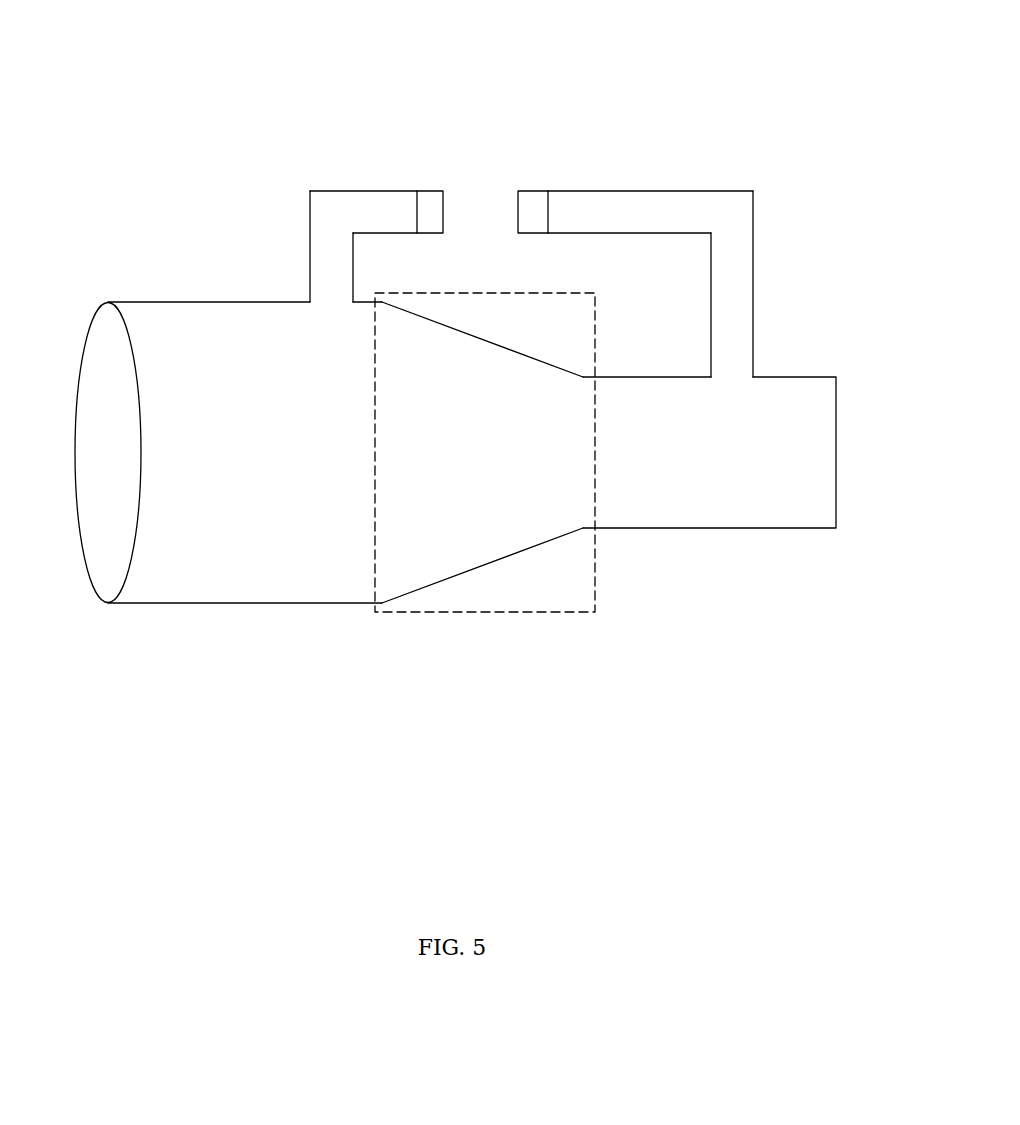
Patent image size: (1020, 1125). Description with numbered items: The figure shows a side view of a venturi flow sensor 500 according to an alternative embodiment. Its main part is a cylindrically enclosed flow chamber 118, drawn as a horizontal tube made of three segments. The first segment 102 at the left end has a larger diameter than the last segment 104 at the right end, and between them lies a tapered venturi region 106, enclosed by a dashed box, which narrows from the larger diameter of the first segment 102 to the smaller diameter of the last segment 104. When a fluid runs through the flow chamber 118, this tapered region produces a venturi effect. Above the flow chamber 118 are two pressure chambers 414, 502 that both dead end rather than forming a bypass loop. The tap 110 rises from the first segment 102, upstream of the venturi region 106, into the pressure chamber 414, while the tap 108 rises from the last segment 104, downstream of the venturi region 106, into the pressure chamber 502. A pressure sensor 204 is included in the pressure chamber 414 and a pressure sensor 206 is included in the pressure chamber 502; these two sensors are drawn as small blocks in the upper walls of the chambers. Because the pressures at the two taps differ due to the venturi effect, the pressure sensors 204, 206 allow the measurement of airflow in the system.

The venturi flow sensor 500 is at (702, 118).
The first segment 102 is at (173, 580).
The cylindrically enclosed flow chamber 118 is at (70, 581).
The tapered venturi region 106 is at (472, 595).
The last segment 104 is at (724, 492).
The tap 108 is at (721, 332).
The tap 110 is at (323, 278).
The pressure chamber 414 is at (356, 205).
The pressure sensor 204 is at (425, 205).
The pressure sensor 206 is at (538, 213).
The pressure chamber 502 is at (694, 207).